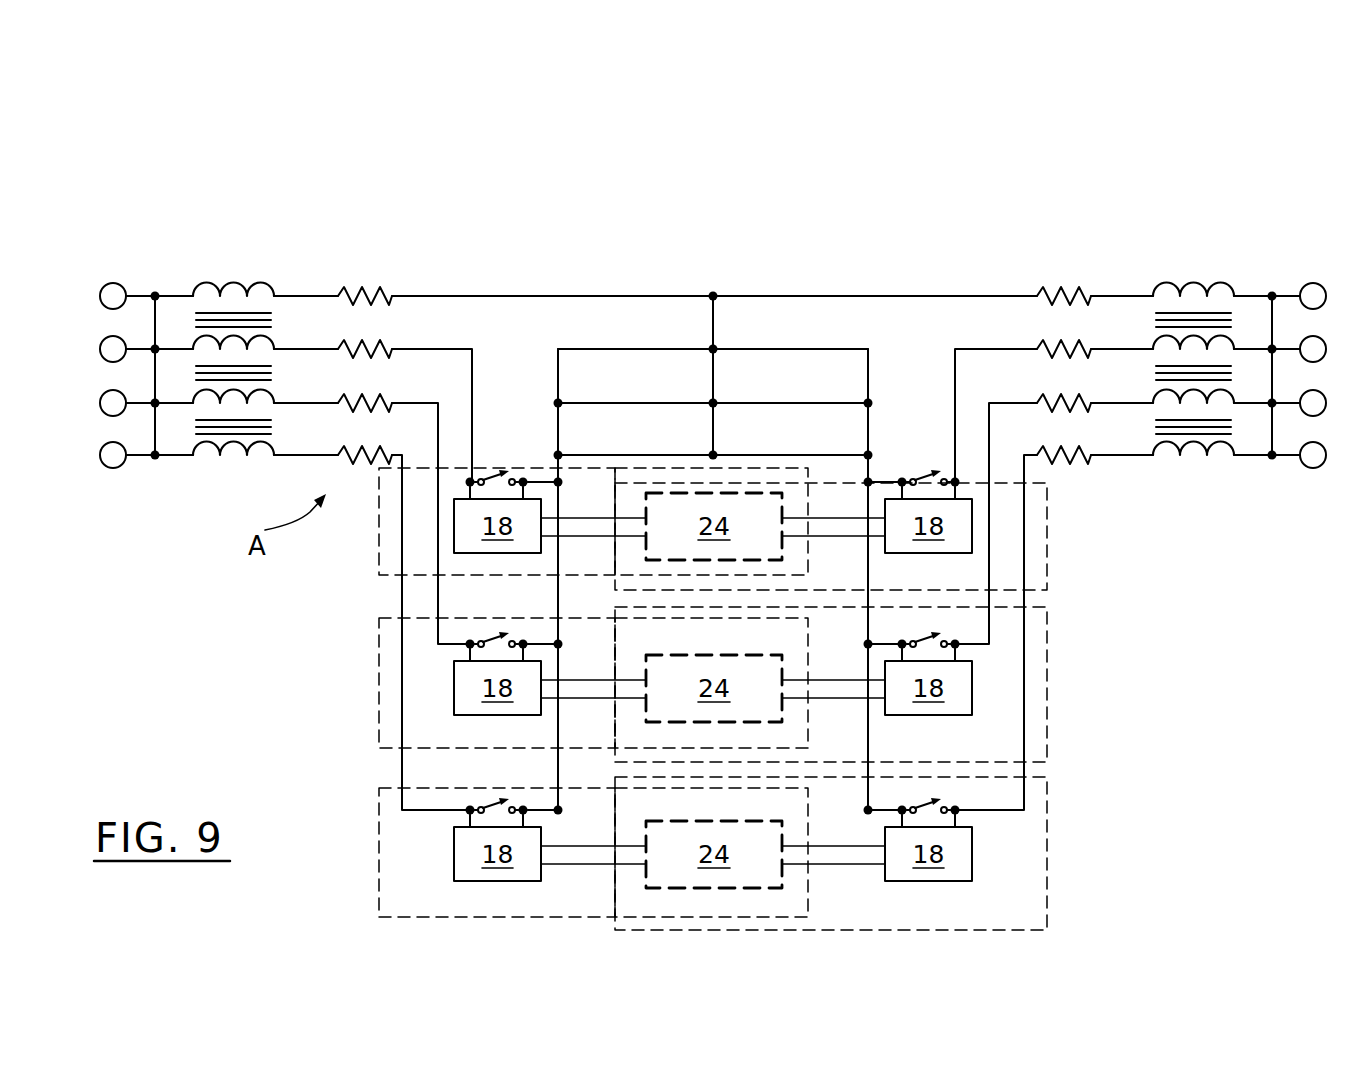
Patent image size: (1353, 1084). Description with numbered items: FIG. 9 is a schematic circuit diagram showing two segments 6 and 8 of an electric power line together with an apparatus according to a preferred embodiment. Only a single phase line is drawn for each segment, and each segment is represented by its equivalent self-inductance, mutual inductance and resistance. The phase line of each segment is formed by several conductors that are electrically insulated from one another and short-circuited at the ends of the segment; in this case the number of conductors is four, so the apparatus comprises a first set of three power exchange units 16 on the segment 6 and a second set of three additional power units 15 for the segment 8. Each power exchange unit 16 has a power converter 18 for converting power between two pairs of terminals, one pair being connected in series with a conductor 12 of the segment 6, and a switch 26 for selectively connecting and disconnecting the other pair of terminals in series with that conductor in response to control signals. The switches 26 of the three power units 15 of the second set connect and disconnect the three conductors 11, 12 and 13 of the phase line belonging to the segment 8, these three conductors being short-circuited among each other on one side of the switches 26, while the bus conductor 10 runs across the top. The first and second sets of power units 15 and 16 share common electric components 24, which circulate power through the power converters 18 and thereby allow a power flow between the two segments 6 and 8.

The segment 6 is at (152, 183).
The segment 8 is at (718, 183).
The conductor 10 is at (637, 296).
The conductor 11 is at (617, 349).
The conductor 12 is at (683, 403).
The conductor 13 is at (598, 455).
The power unit 15 is at (1032, 562).
The power exchange unit 16 is at (392, 557).
The power converter 18 is at (713, 684).
The electric component 24 is at (711, 692).
The switch 26 is at (488, 478).